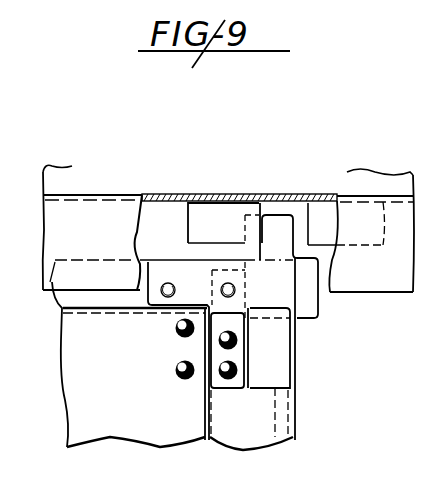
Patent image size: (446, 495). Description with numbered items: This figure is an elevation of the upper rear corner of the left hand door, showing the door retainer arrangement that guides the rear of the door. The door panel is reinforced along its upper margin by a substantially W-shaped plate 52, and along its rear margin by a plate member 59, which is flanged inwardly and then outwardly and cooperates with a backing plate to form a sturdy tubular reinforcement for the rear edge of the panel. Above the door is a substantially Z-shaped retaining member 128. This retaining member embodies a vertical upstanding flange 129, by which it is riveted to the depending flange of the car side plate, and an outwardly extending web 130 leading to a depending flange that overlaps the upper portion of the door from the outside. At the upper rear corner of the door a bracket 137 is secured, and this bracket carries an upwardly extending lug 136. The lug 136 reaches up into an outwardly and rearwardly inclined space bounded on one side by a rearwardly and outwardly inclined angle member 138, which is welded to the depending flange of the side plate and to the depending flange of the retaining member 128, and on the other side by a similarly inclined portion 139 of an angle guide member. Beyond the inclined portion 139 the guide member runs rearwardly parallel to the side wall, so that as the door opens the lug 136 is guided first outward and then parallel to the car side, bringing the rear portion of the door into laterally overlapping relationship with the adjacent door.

The W-shaped plate 52 is at (63, 295).
The plate member 59 is at (250, 440).
The retaining member 128 is at (102, 215).
The vertical upstanding flange 129 is at (66, 177).
The outwardly extending web 130 is at (172, 195).
The lug 136 is at (272, 225).
The bracket 137 is at (277, 353).
The angle member 138 is at (218, 222).
The inclined portion 139 is at (322, 215).